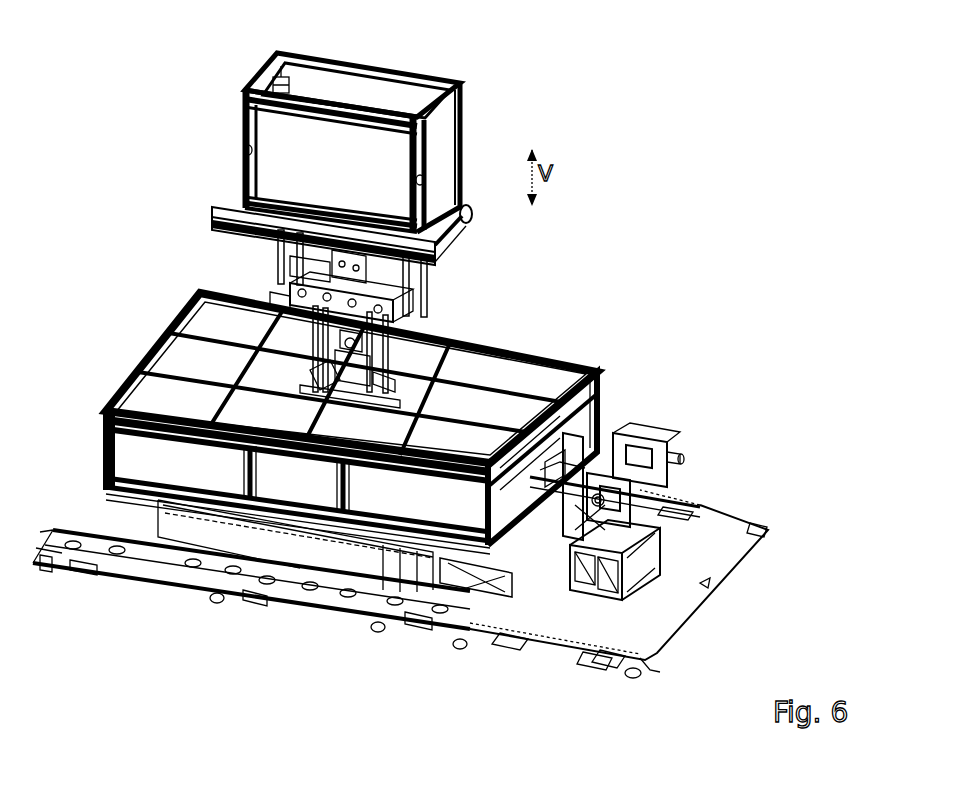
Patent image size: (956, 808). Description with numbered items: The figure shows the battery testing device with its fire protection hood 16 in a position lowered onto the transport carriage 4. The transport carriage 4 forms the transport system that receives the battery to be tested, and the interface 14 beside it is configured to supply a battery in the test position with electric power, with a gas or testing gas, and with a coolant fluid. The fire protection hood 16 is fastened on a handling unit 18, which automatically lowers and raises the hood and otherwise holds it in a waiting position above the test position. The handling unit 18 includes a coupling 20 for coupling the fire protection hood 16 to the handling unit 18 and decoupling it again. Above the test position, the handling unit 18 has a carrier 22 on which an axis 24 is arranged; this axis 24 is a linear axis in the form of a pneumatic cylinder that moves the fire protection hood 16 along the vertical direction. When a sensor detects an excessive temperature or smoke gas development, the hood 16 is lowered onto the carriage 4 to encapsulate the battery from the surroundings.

The transport carriage 4 is at (197, 535).
The interface 14 is at (628, 422).
The fire protection hood 16 is at (193, 410).
The handling unit 18 is at (276, 276).
The coupling 20 is at (308, 358).
The carrier 22 is at (210, 208).
The axis 24 is at (264, 84).